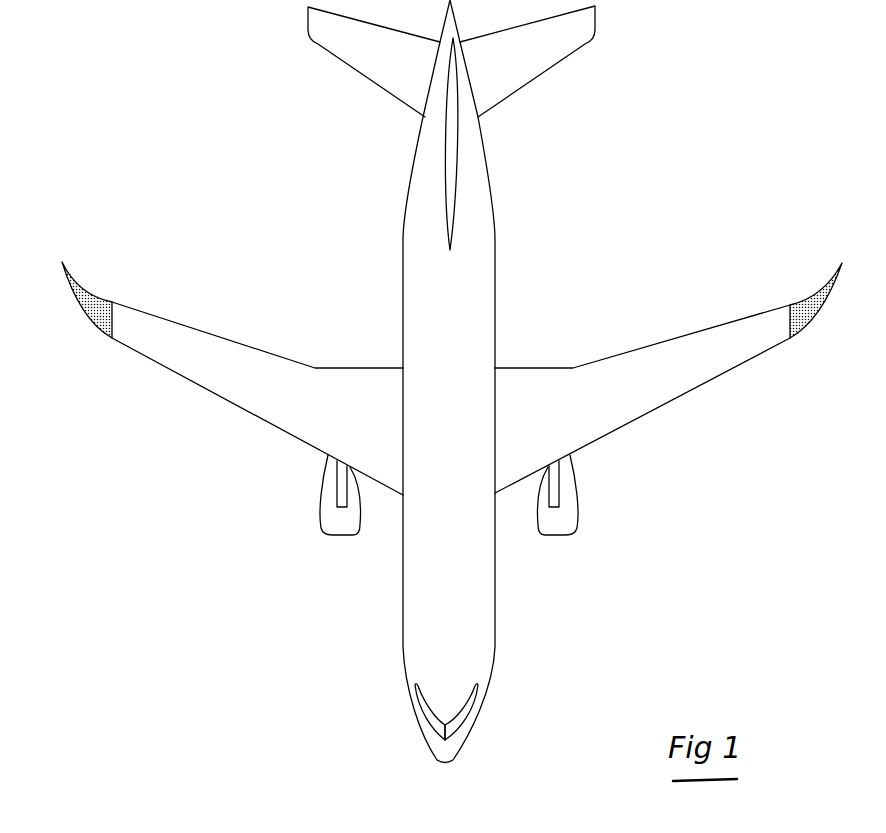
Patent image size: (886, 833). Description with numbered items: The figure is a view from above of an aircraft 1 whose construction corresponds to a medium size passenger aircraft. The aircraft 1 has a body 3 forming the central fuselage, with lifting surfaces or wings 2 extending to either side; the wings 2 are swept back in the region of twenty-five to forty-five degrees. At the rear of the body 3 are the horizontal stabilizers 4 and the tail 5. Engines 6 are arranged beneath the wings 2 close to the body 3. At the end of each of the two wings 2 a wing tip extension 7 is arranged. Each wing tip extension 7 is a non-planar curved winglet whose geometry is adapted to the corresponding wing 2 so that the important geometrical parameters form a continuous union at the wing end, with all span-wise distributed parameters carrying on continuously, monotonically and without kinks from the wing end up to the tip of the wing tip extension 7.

The aircraft 1 is at (443, 381).
The wings 2 is at (227, 392).
The body 3 is at (455, 339).
The rear horizontal stabilizers 4 is at (364, 62).
The tail 5 is at (449, 165).
The engines 6 is at (332, 530).
The wing tip extension 7 is at (92, 313).